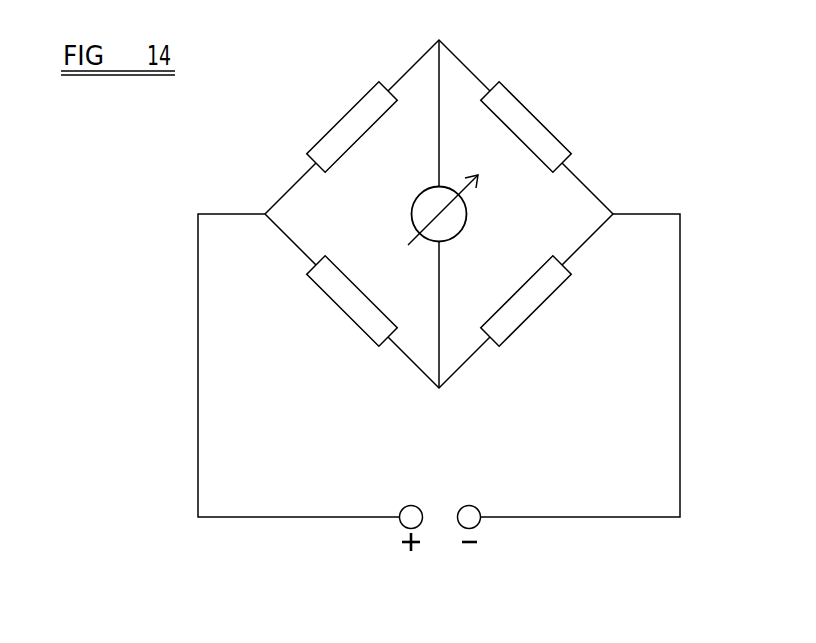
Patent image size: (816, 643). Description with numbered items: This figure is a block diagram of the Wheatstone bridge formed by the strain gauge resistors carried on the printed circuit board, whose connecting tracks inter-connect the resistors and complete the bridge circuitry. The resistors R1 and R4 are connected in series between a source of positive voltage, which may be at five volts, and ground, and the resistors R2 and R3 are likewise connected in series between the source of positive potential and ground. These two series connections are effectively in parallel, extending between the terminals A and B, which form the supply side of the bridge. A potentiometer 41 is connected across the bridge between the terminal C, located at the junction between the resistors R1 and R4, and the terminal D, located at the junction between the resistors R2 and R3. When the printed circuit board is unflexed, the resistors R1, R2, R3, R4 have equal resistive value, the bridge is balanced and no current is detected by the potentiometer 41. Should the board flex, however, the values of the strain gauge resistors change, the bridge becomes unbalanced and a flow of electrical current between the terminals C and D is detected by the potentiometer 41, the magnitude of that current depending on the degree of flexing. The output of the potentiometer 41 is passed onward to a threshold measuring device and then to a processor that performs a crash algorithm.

The potentiometer 41 is at (467, 214).
The resistor R1 is at (342, 122).
The resistor R2 is at (534, 307).
The further resistor R3 is at (349, 307).
The further resistor R4 is at (531, 121).
The terminal A is at (251, 197).
The terminal B is at (624, 197).
The terminal C is at (438, 29).
The terminal D is at (439, 404).